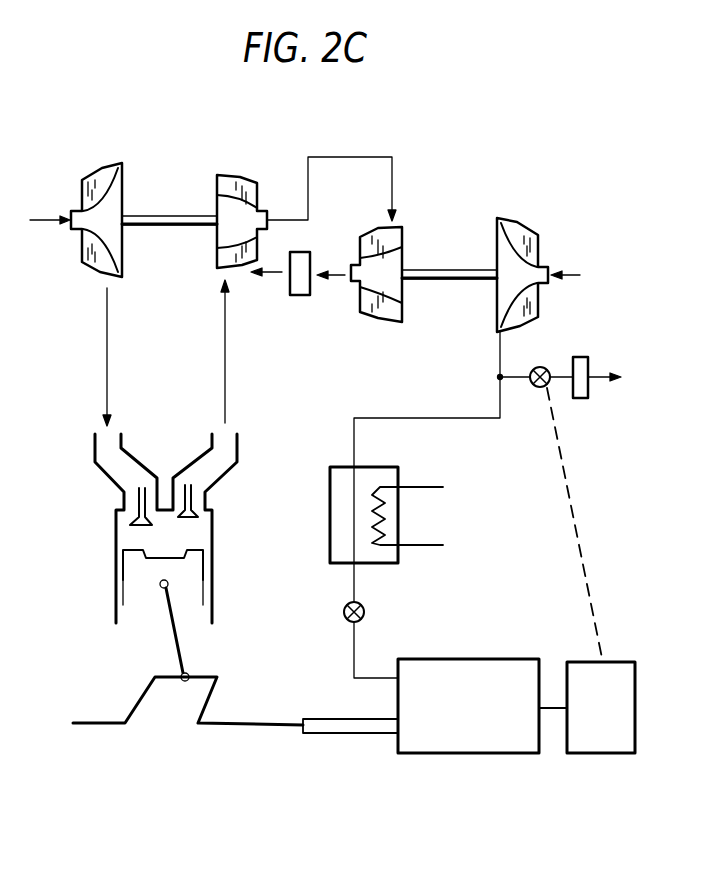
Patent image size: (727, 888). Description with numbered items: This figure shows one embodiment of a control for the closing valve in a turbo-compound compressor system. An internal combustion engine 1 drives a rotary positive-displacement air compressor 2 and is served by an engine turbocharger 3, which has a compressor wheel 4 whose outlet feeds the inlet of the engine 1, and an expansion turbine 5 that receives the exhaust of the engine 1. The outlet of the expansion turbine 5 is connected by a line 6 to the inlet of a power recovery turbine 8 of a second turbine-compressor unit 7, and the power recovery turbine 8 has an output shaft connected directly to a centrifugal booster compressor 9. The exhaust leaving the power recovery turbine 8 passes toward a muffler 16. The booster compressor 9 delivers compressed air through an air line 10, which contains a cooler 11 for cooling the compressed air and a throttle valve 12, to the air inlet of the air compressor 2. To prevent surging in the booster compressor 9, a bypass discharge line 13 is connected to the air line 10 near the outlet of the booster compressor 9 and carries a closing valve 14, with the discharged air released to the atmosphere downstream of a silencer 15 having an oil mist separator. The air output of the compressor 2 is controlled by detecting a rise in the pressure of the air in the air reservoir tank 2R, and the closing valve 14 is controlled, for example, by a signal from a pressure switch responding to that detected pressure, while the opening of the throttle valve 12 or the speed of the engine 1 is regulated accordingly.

The internal combustion engine 1 is at (104, 540).
The rotary positive-displacement air compressor 2 is at (481, 630).
The air reservoir tank 2R is at (607, 757).
The engine turbocharger 3 is at (168, 196).
The compressor wheel 4 is at (99, 176).
The expansion turbine 5 is at (242, 174).
The line 6 is at (363, 160).
The second turbocharger 7 is at (453, 252).
The power recovery turbine 8 is at (400, 226).
The centrifugal booster compressor 9 is at (533, 238).
The air line 10 is at (461, 419).
The cooler 11 is at (398, 467).
The throttle valve 12 is at (364, 612).
The bypass discharge line 13 is at (515, 378).
The closing valve 14 is at (542, 368).
The silencer 15 is at (583, 400).
The muffler 16 is at (292, 297).